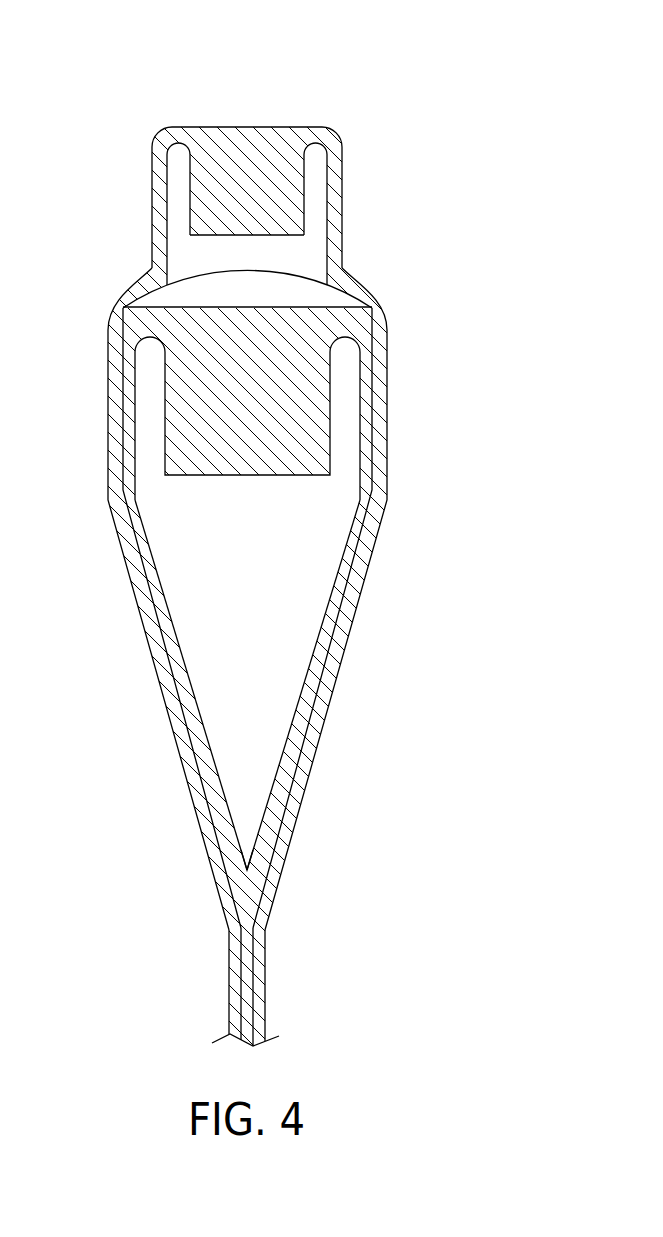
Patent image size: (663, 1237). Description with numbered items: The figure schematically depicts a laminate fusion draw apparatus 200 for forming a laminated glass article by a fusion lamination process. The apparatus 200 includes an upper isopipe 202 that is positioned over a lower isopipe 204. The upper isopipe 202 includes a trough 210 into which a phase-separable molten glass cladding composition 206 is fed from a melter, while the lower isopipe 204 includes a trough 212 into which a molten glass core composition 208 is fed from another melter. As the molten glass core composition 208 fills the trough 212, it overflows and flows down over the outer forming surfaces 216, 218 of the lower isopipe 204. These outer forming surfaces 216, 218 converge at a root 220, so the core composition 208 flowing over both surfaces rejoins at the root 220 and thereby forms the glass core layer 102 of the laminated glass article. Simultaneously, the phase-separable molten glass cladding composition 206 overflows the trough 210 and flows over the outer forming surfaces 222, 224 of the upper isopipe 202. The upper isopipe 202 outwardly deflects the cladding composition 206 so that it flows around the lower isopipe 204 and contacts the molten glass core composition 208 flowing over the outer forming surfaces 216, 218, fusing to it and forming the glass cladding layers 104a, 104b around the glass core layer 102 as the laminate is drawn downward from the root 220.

The laminate fusion draw apparatus 200 is at (280, 523).
The phase-separable molten glass cladding composition 206 is at (244, 136).
The upper isopipe 202 is at (305, 158).
The trough 210 is at (185, 193).
The outer forming surface 222 is at (170, 243).
The outer forming surface 224 is at (335, 210).
The molten glass core composition 208 is at (316, 332).
The trough 212 is at (160, 417).
The lower isopipe 204 is at (347, 382).
The outer forming surface 218 is at (153, 553).
The outer forming surface 216 is at (338, 577).
The root 220 is at (249, 873).
The glass core layer 102 is at (248, 937).
The glass cladding layer 104a is at (232, 993).
The glass cladding layer 104b is at (265, 983).